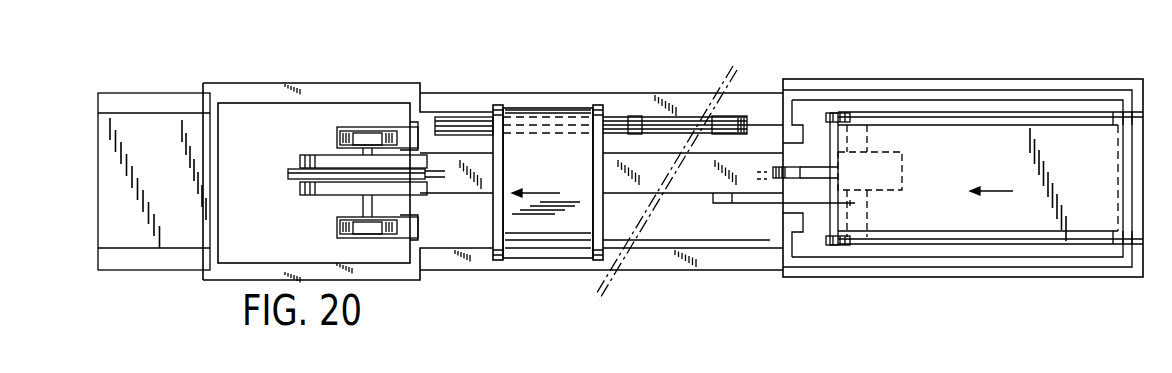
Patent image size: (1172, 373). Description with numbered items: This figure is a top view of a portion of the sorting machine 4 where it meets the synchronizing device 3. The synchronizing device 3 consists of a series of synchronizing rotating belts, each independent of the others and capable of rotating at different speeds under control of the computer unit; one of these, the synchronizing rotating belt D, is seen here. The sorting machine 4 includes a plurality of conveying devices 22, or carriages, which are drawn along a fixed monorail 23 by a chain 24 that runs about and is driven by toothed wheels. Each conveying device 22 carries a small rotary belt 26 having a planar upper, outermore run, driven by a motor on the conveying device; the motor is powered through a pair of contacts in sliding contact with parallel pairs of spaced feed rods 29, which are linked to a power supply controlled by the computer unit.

The synchronizing device 3 is at (1003, 64).
The sorting machine 4 is at (448, 62).
The conveying device 22 is at (527, 97).
The small rotary belt 26 is at (575, 177).
The feed rods 29 is at (735, 117).
The monorail 23 is at (697, 178).
The chain 24 is at (290, 176).
The synchronizing rotating belt D is at (945, 142).